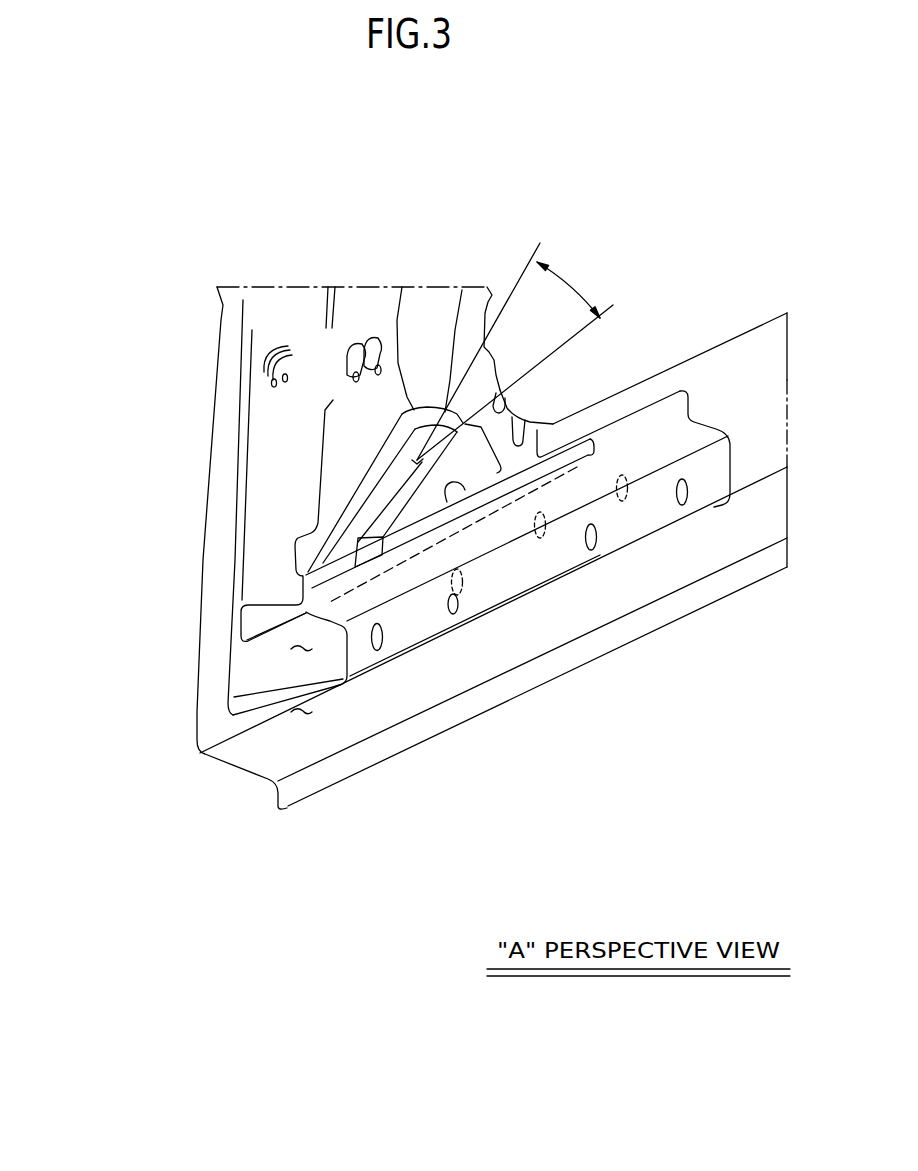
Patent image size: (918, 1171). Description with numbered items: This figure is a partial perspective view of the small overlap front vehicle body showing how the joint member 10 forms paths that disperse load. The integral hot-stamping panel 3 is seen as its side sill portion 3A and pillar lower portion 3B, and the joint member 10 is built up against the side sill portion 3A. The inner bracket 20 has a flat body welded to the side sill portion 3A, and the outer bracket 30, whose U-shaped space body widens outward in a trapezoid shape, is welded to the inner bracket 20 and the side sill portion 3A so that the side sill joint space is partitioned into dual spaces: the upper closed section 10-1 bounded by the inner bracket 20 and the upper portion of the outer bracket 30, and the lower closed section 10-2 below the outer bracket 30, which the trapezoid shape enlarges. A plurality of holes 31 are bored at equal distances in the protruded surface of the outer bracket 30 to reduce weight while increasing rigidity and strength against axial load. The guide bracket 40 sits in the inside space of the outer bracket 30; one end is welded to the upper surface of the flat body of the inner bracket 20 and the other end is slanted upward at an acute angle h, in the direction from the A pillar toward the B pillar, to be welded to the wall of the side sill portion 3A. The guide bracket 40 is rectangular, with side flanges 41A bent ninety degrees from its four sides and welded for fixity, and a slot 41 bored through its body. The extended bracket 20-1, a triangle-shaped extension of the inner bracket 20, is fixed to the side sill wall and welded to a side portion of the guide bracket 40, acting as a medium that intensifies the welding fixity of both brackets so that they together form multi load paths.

The integral hot-stamping panel 3 is at (60, 668).
The side sill portion 3A is at (233, 768).
The pillar lower portion 3B is at (220, 570).
The joint member 10 is at (657, 335).
The upper closed section 10-1 is at (298, 651).
The lower closed section 10-2 is at (300, 715).
The inner bracket 20 is at (290, 588).
The extended bracket 20-1 is at (420, 495).
The outer bracket 30 is at (327, 673).
The holes 31 is at (594, 545).
The guide bracket 40 is at (356, 203).
The slot 41 is at (414, 461).
The side flanges 41A is at (380, 460).
The acute angle h is at (508, 351).